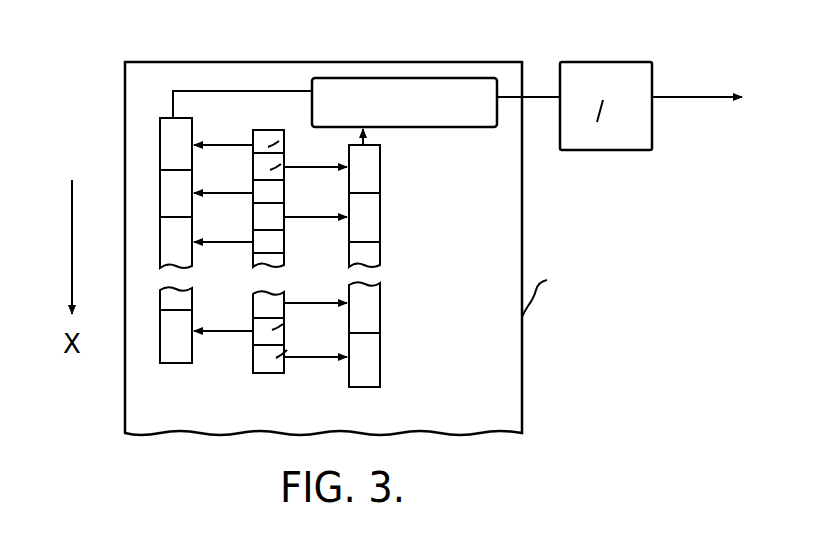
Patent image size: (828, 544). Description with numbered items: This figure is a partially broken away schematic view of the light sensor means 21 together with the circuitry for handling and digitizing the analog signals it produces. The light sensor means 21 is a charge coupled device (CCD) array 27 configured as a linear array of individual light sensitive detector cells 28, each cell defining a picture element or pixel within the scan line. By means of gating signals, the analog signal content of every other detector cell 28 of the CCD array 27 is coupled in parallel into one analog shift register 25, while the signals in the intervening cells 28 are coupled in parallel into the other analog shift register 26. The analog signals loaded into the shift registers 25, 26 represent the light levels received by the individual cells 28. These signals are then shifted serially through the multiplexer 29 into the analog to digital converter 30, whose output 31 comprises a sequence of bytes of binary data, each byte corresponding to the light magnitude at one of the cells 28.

The light sensor means 21 is at (275, 56).
The analog shift register 25 is at (157, 151).
The analog shift register 26 is at (365, 391).
The CCD array 27 is at (277, 382).
The detector cells 28 is at (276, 358).
The multiplexer 29 is at (470, 128).
The analog to digital converter 30 is at (612, 150).
The output 31 is at (688, 98).